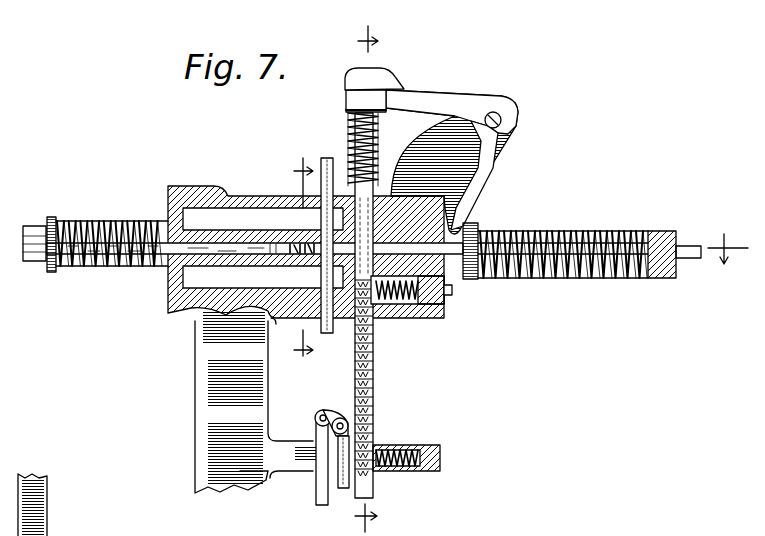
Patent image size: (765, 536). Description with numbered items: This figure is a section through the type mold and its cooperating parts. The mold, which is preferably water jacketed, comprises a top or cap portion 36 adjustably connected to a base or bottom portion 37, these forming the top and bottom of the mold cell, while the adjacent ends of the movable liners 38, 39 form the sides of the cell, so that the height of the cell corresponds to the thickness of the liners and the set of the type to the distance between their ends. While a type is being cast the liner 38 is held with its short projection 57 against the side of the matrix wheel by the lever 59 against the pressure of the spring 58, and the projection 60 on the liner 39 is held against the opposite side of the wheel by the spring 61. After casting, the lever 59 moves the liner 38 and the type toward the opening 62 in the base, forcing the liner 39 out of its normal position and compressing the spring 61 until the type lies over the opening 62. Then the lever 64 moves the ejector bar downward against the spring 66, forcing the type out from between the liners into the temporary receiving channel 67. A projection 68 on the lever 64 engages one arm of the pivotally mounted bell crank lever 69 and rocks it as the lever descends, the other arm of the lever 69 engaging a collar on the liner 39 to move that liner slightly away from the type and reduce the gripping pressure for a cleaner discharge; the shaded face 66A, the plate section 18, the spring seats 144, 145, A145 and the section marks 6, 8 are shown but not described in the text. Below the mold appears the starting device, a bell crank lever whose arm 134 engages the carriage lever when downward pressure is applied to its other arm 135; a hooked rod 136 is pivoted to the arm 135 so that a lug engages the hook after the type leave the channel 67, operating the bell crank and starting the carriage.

The top or cap portion 36 is at (219, 187).
The base or bottom portion 37 is at (167, 306).
The movable liner 38 is at (158, 243).
The movable liner 39 is at (468, 226).
The short projection 57 is at (270, 246).
The spring 58 is at (104, 213).
The lever 59 is at (21, 217).
The projection 60 is at (310, 247).
The spring 61 is at (500, 266).
The opening 62 is at (376, 283).
The lever 64 is at (350, 63).
The spring 66 is at (340, 128).
The cam face 66A is at (382, 178).
The temporary receiving channel 67 is at (366, 372).
The projection 68 is at (380, 82).
The bell crank lever 69 is at (448, 96).
The plate 18 is at (307, 253).
The arm 134 is at (335, 481).
The arm 135 is at (331, 409).
The hooked rod 136 is at (308, 470).
The spring housing 144 is at (402, 437).
The pin 145 is at (438, 298).
The spring housing A145 is at (440, 288).
The section line 6- 6 is at (728, 247).
The section line 8- 8 is at (366, 274).